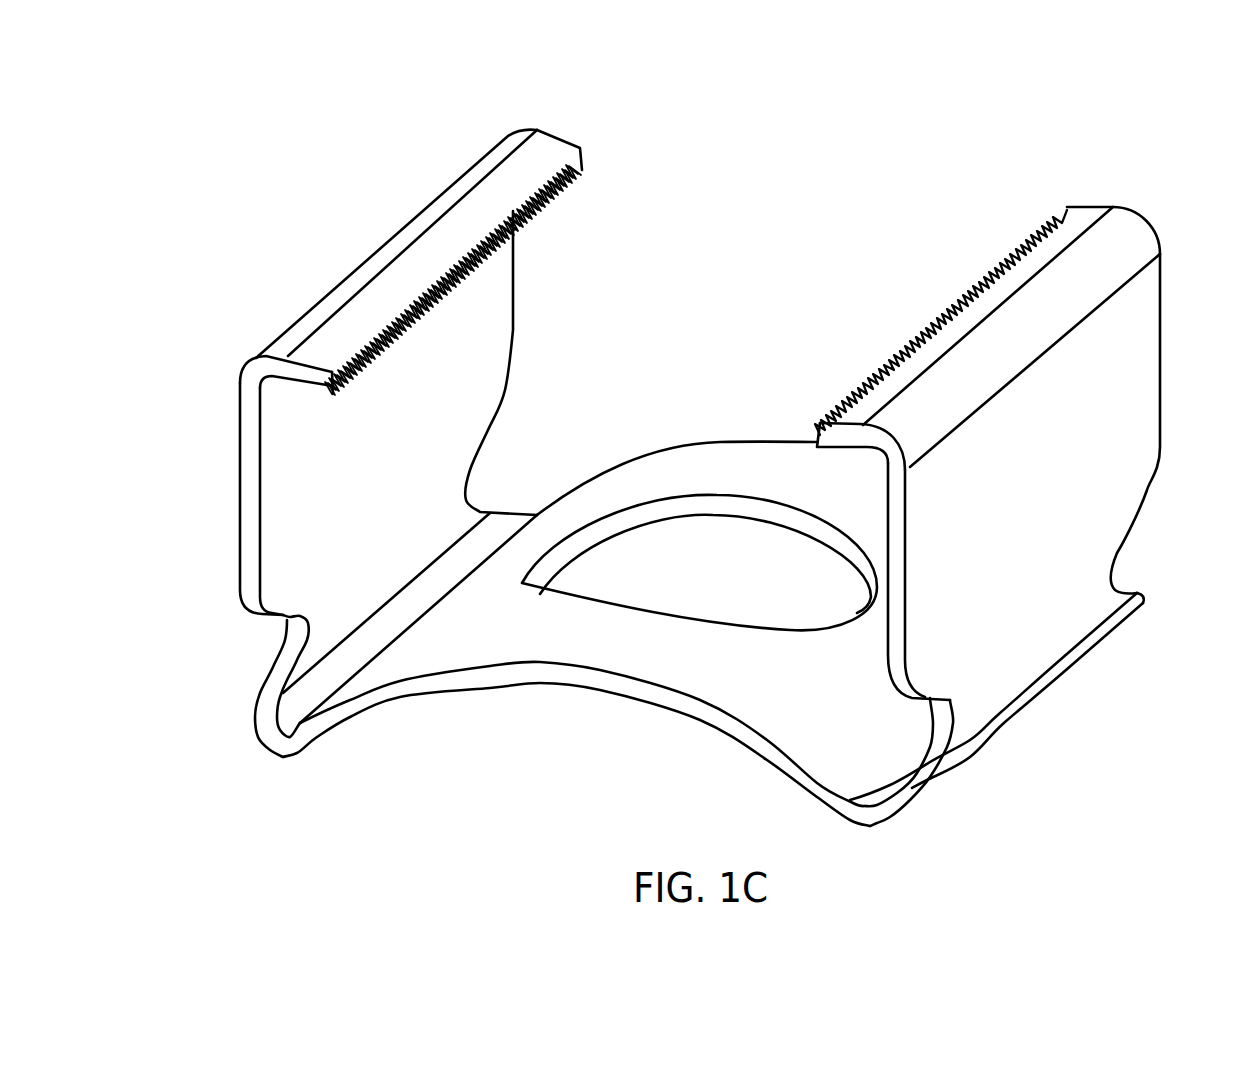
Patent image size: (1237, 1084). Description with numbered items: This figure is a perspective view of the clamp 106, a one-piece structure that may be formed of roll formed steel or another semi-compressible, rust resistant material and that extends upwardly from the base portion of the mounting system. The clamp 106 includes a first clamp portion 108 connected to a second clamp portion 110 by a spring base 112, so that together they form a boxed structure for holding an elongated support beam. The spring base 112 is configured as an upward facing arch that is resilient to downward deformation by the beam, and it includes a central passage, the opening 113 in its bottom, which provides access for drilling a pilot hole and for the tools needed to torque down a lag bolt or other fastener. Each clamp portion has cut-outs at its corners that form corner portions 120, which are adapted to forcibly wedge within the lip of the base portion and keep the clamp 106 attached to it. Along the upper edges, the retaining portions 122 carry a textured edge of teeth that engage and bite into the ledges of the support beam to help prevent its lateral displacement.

The clamp 106 is at (807, 97).
The first clamp portion 108 is at (238, 470).
The second clamp portion 110 is at (1162, 283).
The spring base 112 is at (689, 448).
The opening 113 is at (737, 546).
The corner portions 120 is at (278, 748).
The retaining portions 122 is at (483, 172).